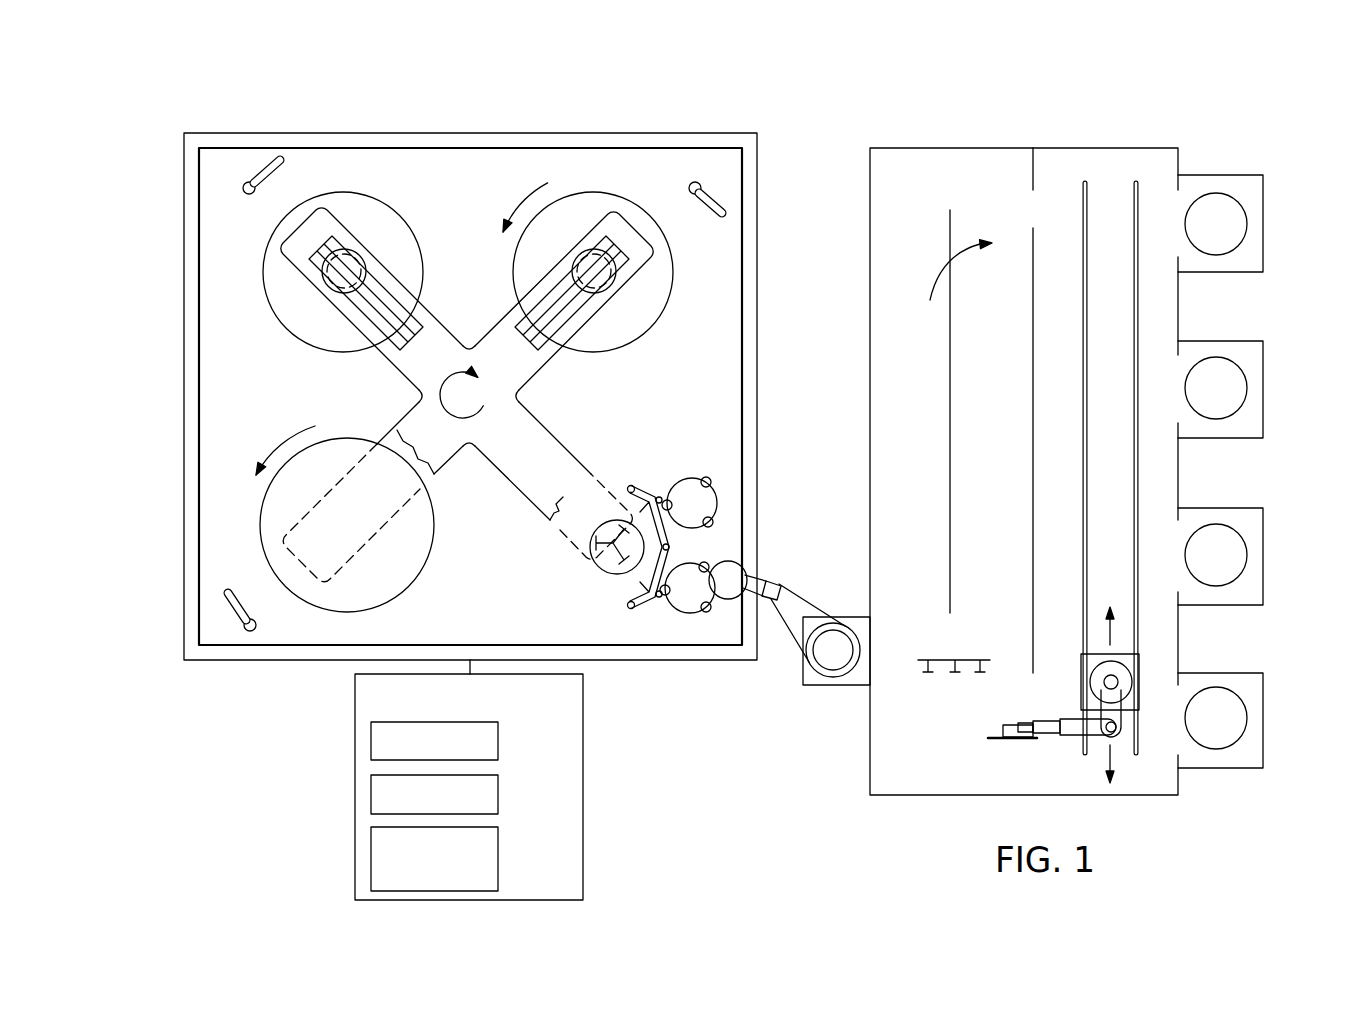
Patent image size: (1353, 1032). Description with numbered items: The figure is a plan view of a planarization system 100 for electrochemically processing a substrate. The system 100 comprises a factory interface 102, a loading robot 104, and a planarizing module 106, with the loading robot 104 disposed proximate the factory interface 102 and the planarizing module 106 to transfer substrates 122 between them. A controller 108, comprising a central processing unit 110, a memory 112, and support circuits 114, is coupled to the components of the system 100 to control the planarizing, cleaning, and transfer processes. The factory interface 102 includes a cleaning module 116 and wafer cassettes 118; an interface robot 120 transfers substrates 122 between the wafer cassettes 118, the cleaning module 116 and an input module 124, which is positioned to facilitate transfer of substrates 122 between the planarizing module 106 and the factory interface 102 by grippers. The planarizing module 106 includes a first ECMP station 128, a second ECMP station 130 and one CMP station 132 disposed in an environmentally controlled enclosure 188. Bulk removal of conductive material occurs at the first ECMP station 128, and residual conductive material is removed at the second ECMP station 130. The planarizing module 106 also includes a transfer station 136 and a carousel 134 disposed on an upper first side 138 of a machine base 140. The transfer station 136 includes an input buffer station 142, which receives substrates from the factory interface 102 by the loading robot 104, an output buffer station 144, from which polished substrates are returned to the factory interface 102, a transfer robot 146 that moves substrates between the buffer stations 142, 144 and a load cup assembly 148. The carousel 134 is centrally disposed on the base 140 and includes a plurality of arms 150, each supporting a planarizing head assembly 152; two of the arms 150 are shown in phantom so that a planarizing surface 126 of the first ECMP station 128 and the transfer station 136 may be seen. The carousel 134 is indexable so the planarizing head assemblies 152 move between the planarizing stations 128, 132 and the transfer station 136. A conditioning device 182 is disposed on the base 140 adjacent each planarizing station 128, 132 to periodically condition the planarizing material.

The planarization system 100 is at (232, 746).
The factory interface 102 is at (844, 795).
The loading robot 104 is at (816, 695).
The planarizing module 106 is at (230, 650).
The controller 108 is at (504, 787).
The central processing unit 110 is at (498, 740).
The memory 112 is at (498, 795).
The support circuits 114 is at (498, 855).
The cleaning module 116 is at (898, 399).
The wafer cassettes 118 is at (1265, 250).
The interface robot 120 is at (1120, 672).
The substrates 122 is at (1235, 213).
The input module 124 is at (940, 660).
The planarizing surface 126 is at (362, 577).
The first electrochemical mechanical planarizing station 128 is at (443, 571).
The second electrochemical mechanical planarizing station 130 is at (321, 208).
The chemical mechanical planarizing station 132 is at (684, 232).
The carousel 134 is at (528, 366).
The transfer station 136 is at (559, 618).
The first side 138 is at (212, 627).
The machine base 140 is at (199, 422).
The input buffer station 142 is at (683, 610).
The output buffer station 144 is at (688, 478).
The transfer robot 146 is at (669, 548).
The load cup assembly 148 is at (603, 570).
The arms 150 is at (490, 355).
The planarizing head assembly 152 is at (355, 252).
The conditioning device 182 is at (244, 182).
The environmentally controlled enclosure 188 is at (540, 130).